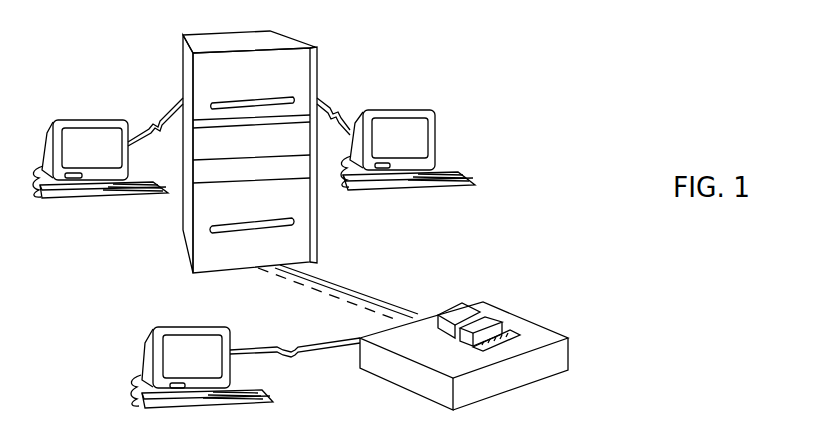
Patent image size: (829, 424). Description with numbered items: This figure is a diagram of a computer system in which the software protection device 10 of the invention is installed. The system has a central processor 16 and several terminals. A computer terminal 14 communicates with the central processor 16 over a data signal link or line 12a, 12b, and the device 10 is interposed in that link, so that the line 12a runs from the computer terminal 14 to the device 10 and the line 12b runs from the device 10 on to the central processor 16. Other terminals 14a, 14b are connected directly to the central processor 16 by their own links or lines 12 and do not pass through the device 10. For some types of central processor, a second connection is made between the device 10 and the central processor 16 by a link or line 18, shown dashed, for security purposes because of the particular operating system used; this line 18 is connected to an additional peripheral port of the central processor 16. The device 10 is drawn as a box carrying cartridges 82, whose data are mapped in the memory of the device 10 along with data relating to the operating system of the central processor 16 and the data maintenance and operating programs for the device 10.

The software protection device 10 is at (543, 322).
The data signal link 12 is at (167, 105).
The data signal link 12a is at (338, 350).
The data signal link 12b is at (372, 293).
The computer terminal 14 is at (147, 355).
The terminal 14a is at (47, 135).
The terminal 14b is at (423, 110).
The central processor 16 is at (287, 42).
The link 18 is at (312, 290).
The cartridges 82 is at (465, 310).